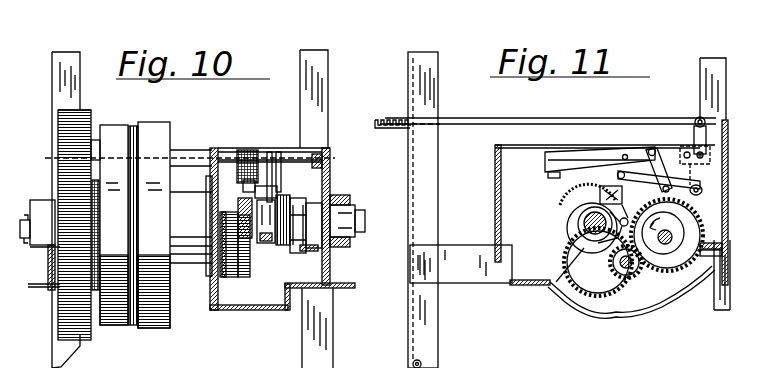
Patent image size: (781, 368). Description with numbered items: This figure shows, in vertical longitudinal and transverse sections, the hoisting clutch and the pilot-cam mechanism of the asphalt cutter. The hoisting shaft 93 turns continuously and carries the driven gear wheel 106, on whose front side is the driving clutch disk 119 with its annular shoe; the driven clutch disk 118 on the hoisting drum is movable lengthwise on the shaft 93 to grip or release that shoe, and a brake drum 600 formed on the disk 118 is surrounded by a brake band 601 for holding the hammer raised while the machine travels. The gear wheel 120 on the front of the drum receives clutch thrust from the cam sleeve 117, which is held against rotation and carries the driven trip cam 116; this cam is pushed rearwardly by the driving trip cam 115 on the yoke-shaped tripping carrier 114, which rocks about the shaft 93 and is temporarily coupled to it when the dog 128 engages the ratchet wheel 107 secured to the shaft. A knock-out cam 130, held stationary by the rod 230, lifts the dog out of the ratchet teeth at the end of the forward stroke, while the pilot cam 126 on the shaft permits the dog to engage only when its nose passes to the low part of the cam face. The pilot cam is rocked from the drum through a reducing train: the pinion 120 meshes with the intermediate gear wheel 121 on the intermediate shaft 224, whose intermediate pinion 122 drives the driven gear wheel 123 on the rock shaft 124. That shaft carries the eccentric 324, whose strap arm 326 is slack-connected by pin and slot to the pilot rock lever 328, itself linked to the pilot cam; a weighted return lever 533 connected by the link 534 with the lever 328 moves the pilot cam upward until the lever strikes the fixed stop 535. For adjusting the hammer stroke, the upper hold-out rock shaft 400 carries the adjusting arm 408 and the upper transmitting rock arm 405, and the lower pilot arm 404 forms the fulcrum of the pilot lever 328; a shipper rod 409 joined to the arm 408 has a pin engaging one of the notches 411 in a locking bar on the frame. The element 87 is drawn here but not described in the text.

In FIG. 10, the shipper rod 409 is at (52, 126).
In FIG. 11, the shipper rod 409 is at (486, 118).
In FIG. 10, the driven gear wheel 106 is at (80, 118).
In FIG. 10, the driven clutch disk 118 is at (133, 130).
In FIG. 10, the brake drum 600 is at (161, 124).
In FIG. 10, the driving clutch disk 119 is at (111, 225).
In FIG. 10, the upper hold-out rock shaft 400 is at (190, 160).
In FIG. 11, the upper hold-out rock shaft 400 is at (712, 160).
In FIG. 10, the brake band 601 is at (178, 192).
In FIG. 10, the shaft 87 is at (191, 226).
In FIG. 10, the gear wheel 120 is at (228, 228).
In FIG. 10, the weighted return lever 533 is at (248, 150).
In FIG. 11, the weighted return lever 533 is at (597, 152).
In FIG. 10, the driven gear wheel 123 is at (228, 198).
In FIG. 11, the driven gear wheel 123 is at (680, 270).
In FIG. 10, the cam sleeve 117 is at (270, 200).
In FIG. 10, the driven trip cam 116 is at (278, 192).
In FIG. 10, the rod 230 is at (280, 210).
In FIG. 10, the pilot cam 126 is at (298, 202).
In FIG. 11, the pilot cam 126 is at (558, 193).
In FIG. 10, the hoisting shaft 93 is at (359, 223).
In FIG. 11, the hoisting shaft 93 is at (584, 229).
In FIG. 10, the knock-out cam 130 is at (305, 248).
In FIG. 10, the tripping carrier 114 is at (292, 245).
In FIG. 11, the tripping carrier 114 is at (568, 280).
In FIG. 10, the driving trip cam 115 is at (268, 254).
In FIG. 10, the ratchet wheel 107 is at (301, 285).
In FIG. 10, the intermediate gear wheel 121 is at (224, 278).
In FIG. 11, the intermediate gear wheel 121 is at (586, 296).
In FIG. 10, the intermediate gear pinion 122 is at (243, 278).
In FIG. 11, the intermediate gear pinion 122 is at (626, 283).
In FIG. 11, the notches 411 is at (397, 120).
In FIG. 11, the pilot rock lever 328 is at (632, 170).
In FIG. 11, the eccentric arm 326 is at (668, 166).
In FIG. 11, the adjusting arm 408 is at (706, 136).
In FIG. 11, the lower pilot arm 404 is at (706, 190).
In FIG. 11, the fixed stop 535 is at (546, 177).
In FIG. 11, the dog 128 is at (616, 205).
In FIG. 11, the rock shaft 124 is at (673, 237).
In FIG. 11, the eccentric 324 is at (716, 252).
In FIG. 11, the intermediate shaft 224 is at (632, 268).
In FIG. 11, the upper transmitting rock arm 405 is at (470, 366).
In FIG. 11, the link 534 is at (663, 168).